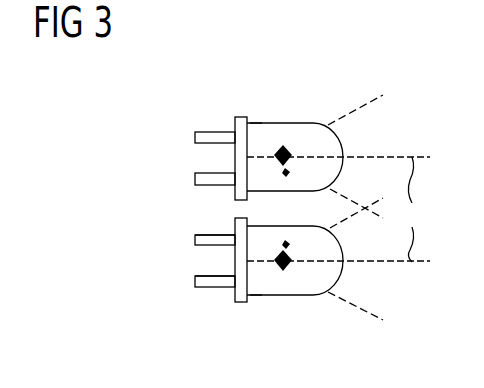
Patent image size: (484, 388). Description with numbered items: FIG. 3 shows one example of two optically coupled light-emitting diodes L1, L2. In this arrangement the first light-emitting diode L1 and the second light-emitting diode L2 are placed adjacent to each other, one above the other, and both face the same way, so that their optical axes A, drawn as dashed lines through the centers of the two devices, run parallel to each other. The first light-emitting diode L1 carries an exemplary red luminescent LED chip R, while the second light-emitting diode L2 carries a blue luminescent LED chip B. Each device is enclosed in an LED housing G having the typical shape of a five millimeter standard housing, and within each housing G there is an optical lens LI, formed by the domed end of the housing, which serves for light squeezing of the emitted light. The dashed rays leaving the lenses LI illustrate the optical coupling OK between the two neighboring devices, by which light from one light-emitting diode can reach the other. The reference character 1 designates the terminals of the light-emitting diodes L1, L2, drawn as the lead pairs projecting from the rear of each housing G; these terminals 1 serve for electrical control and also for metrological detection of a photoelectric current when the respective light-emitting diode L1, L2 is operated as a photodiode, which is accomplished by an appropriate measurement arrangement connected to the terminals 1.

The terminals 1 is at (227, 238).
The LED housing G is at (256, 123).
The red LED chip R is at (282, 150).
The blue LED chip B is at (282, 265).
The first light-emitting diode L1 is at (313, 123).
The second light-emitting diode L2 is at (315, 295).
The optical lens LI is at (344, 147).
The optical coupling OK is at (300, 220).
The optical axis A is at (413, 209).